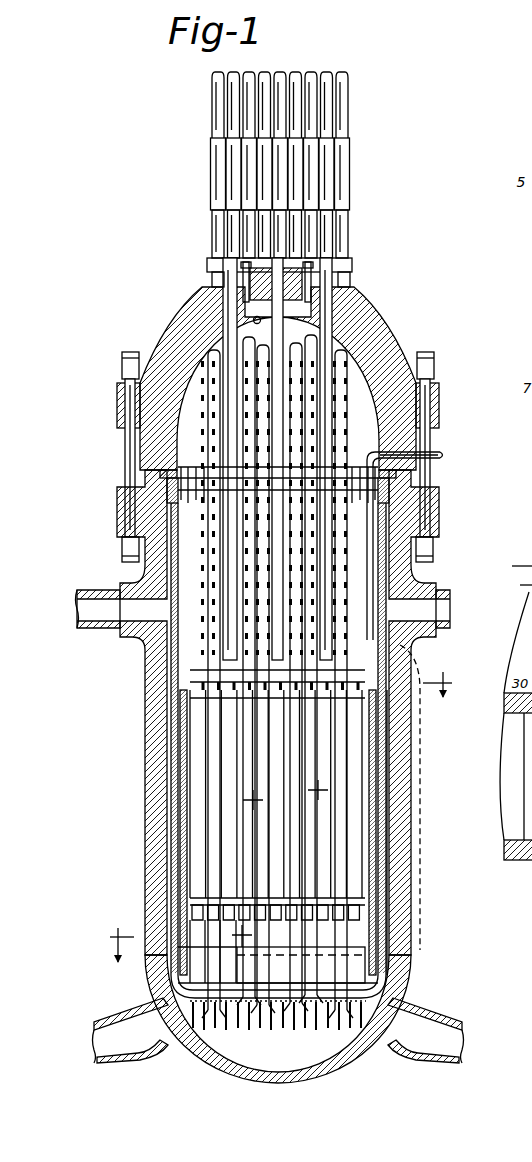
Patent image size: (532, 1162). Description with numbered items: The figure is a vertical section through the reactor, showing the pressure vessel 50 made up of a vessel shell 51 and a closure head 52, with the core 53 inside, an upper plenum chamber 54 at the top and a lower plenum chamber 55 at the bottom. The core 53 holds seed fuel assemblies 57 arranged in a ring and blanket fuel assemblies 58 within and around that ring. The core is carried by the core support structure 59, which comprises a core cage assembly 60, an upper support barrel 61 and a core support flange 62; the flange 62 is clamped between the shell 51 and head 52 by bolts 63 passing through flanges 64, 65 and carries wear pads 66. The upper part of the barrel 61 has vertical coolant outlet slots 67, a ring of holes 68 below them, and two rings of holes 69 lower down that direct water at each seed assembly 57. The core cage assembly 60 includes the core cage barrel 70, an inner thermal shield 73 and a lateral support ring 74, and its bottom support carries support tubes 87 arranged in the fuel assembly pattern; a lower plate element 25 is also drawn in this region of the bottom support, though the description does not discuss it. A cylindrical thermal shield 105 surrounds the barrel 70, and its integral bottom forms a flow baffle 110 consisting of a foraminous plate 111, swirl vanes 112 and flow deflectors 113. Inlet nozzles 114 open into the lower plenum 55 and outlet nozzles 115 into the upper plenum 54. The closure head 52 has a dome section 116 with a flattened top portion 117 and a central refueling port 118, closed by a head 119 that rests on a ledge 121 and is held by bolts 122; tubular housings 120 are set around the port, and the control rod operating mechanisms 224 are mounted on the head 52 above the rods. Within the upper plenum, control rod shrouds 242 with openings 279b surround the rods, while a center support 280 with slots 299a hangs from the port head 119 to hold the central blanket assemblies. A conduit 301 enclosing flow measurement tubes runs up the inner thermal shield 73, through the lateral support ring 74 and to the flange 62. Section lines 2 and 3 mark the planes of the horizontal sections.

The operating mechanisms 224 is at (252, 175).
The tubular housings 120 is at (346, 270).
The bolts 122 is at (236, 283).
The head 119 is at (276, 283).
The circular ledge 121 is at (277, 282).
The flattened top portion 117 is at (354, 292).
The dome section 116 is at (200, 322).
The closure head 52 is at (388, 330).
The refueling port 118 is at (257, 323).
The openings 279b is at (232, 408).
The center support 280 is at (284, 402).
The control rod shroud 242 is at (245, 431).
The slots 299a is at (282, 443).
The upper plenum chamber 54 is at (375, 413).
The flange 64 is at (122, 399).
The core support flange 62 is at (424, 453).
The conduit 301 is at (432, 459).
The bolts 63 is at (126, 473).
The wear pads 66 is at (165, 472).
The flange 65 is at (120, 509).
The vertical coolant outlet slots 67 is at (188, 488).
The holes 68 is at (179, 540).
The upper support barrel 61 is at (170, 573).
The outlet nozzles 115 is at (96, 593).
The holes 69 is at (179, 626).
The core support structure 59 is at (170, 644).
The lateral support ring 74 is at (186, 689).
The vessel shell 51 is at (152, 684).
The section line 2- 2 is at (277, 817).
The pressure vessel 50 is at (142, 710).
The core 53 is at (262, 745).
The thermal shield 105 is at (385, 759).
The section line 3- 3 is at (418, 778).
The seed fuel assemblies 57 is at (190, 797).
The blanket fuel assemblies 58 is at (258, 812).
The inner thermal shield 73 is at (374, 805).
The core cage barrel 70 is at (378, 833).
The core cage assembly 60 is at (170, 854).
The support tubes 87 is at (287, 949).
The flow deflectors 113 is at (392, 973).
The lower core plate 25 is at (293, 982).
The foraminous plate 111 is at (332, 1001).
The inlet nozzles 114 is at (108, 1022).
The swirl vanes 112 is at (250, 1019).
The lower plenum chamber 55 is at (295, 1059).
The flow baffle 110 is at (318, 1040).